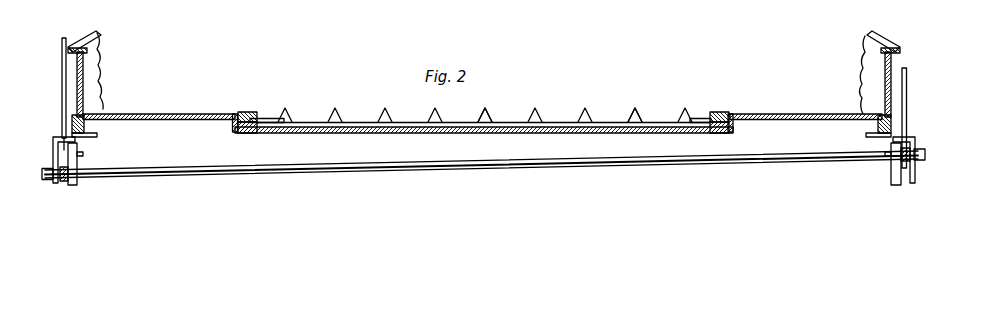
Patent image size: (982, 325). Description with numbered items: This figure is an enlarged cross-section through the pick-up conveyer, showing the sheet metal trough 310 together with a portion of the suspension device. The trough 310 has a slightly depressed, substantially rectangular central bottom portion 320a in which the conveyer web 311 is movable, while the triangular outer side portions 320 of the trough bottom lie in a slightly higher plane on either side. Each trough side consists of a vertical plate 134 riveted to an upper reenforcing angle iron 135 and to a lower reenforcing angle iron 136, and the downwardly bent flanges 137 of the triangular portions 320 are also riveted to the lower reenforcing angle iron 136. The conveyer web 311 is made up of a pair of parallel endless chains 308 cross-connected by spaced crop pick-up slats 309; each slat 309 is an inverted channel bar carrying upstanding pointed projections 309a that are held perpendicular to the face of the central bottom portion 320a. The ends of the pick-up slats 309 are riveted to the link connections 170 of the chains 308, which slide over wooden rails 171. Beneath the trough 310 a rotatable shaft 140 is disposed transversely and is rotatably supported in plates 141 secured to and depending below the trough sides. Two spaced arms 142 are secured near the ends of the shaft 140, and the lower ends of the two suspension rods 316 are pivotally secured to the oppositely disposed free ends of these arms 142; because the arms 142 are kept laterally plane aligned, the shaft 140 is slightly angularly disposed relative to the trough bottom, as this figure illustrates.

The vertical plate 134 is at (78, 82).
The upper reenforcing angle iron 135 is at (90, 33).
The lower reenforcing angle iron 136 is at (97, 136).
The downwardly bent flange 137 is at (85, 125).
The rotatable shaft 140 is at (518, 160).
The plate 141 is at (53, 137).
The arm 142 is at (73, 183).
The link connection 170 is at (268, 118).
The wooden rail 171 is at (246, 132).
The chain 308 is at (256, 97).
The crop pick-up slat 309 is at (567, 122).
The upstanding pointed projection 309a is at (630, 121).
The sheet metal trough 310 is at (118, 42).
The conveyer web 311 is at (379, 116).
The suspension rod 316 is at (61, 56).
The outer side portion of trough bottom 320 is at (204, 114).
The central bottom portion 320a is at (460, 133).